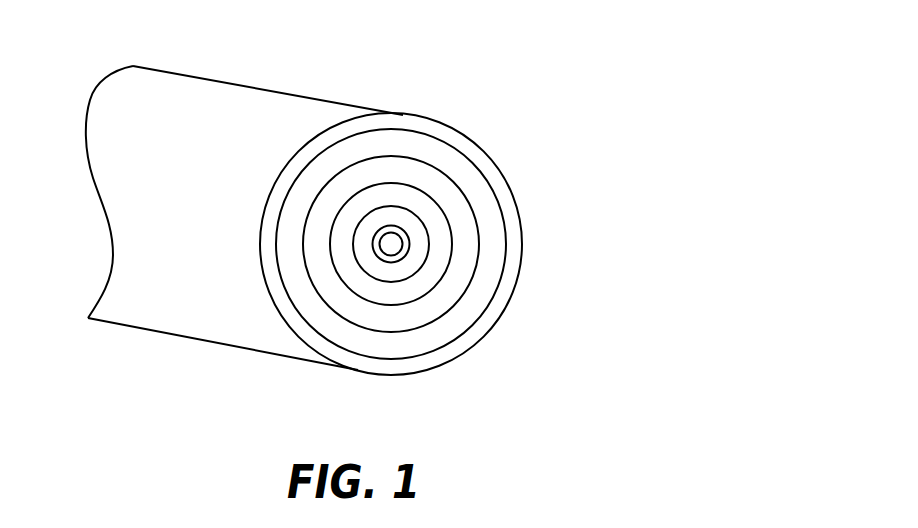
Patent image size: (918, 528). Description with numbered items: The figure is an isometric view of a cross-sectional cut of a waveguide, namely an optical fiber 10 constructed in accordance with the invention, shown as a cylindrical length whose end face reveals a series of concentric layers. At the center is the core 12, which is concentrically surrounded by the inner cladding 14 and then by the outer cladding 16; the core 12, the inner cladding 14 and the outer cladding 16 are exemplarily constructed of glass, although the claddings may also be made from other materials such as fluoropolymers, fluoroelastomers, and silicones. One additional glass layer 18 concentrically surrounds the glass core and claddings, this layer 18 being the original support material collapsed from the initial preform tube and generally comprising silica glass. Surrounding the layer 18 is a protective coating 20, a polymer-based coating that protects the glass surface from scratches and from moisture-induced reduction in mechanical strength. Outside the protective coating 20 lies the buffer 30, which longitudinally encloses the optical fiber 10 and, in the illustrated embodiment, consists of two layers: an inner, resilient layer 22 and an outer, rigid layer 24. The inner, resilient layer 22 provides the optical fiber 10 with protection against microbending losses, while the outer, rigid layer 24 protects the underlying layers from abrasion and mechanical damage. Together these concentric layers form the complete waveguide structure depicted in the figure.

The optical fiber 10 is at (251, 78).
The core 12 is at (390, 240).
The inner cladding 14 is at (403, 228).
The outer cladding 16 is at (422, 243).
The additional glass layer 18 is at (438, 275).
The protective coating 20 is at (437, 310).
The inner resilient layer 22 is at (409, 352).
The outer rigid layer 24 is at (350, 360).
The buffer 30 is at (276, 273).